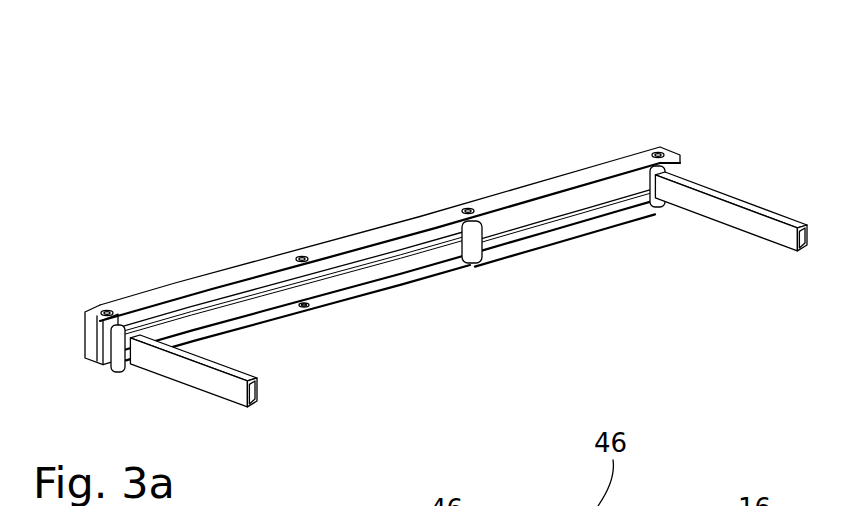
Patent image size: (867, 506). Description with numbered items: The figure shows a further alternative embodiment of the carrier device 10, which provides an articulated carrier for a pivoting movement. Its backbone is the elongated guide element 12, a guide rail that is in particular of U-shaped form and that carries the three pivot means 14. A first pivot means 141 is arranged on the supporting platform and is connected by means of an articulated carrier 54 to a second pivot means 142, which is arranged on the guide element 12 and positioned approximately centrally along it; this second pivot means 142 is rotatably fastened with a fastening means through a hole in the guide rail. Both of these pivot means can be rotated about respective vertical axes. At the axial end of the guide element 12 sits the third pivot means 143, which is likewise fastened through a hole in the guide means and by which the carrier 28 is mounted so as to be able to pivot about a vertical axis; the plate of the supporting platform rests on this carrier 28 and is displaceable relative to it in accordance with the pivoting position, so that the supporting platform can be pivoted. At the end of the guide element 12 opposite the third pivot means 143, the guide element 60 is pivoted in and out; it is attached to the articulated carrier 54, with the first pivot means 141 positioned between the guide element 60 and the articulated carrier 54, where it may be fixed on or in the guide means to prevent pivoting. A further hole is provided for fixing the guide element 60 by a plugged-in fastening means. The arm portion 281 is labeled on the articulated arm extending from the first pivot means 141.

The carrier device 10 is at (176, 130).
The guide element 12 is at (571, 180).
The pivot means 14 is at (404, 223).
The first pivot means 141 is at (124, 352).
The second pivot means 142 is at (487, 263).
The third pivot means 143 is at (651, 168).
The carrier 28 is at (757, 233).
The arm portion 281 is at (200, 353).
The articulated carrier 54 is at (330, 287).
The guide element 60 is at (102, 340).